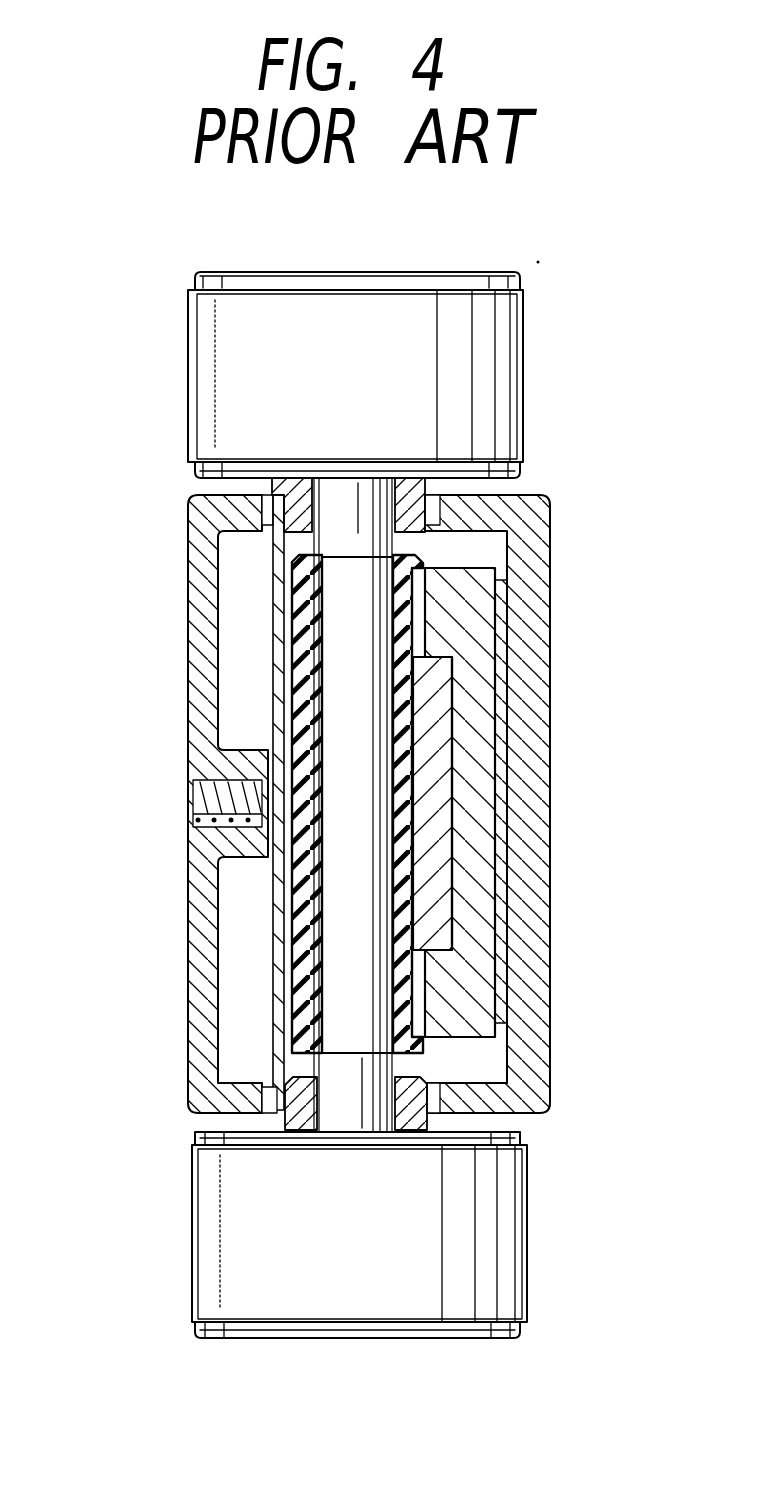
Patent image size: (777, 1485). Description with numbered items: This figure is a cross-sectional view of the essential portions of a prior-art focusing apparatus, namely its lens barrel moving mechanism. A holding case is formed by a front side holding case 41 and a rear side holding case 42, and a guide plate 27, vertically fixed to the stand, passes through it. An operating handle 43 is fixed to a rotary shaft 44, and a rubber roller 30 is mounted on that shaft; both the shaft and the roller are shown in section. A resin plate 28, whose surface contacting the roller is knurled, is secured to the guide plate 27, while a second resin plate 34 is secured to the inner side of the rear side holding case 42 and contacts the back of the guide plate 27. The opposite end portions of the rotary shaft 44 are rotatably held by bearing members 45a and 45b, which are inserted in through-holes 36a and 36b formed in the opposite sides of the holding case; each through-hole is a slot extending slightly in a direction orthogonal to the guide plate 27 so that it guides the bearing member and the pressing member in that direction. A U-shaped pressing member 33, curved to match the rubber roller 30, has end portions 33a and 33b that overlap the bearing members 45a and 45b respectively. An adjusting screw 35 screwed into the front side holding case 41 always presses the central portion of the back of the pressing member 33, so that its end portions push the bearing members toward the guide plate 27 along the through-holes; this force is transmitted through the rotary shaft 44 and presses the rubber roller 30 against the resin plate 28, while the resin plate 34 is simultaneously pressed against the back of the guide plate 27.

The guide plate 27 is at (482, 782).
The resin plate 28 is at (433, 707).
The rubber roller 30 is at (308, 932).
The pressing member 33 is at (280, 982).
The end portion of the pressing member 33a is at (262, 515).
The end portion of the pressing member 33b is at (263, 1100).
The resin plate 34 is at (500, 987).
The adjusting screw 35 is at (212, 808).
The through-hole 36a is at (440, 510).
The through-hole 36b is at (433, 1097).
The front side holding case 41 is at (205, 558).
The rear side holding case 42 is at (530, 532).
The operating handle 43 is at (510, 378).
The rotary shaft 44 is at (377, 925).
The bearing member 45a is at (412, 482).
The bearing member 45b is at (410, 1120).